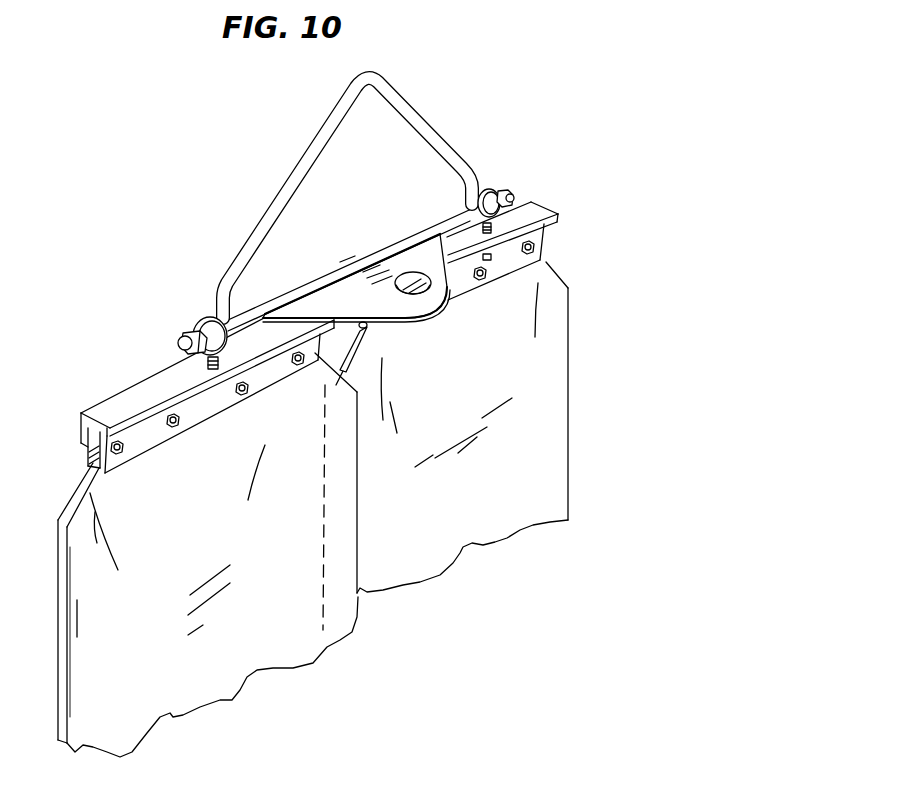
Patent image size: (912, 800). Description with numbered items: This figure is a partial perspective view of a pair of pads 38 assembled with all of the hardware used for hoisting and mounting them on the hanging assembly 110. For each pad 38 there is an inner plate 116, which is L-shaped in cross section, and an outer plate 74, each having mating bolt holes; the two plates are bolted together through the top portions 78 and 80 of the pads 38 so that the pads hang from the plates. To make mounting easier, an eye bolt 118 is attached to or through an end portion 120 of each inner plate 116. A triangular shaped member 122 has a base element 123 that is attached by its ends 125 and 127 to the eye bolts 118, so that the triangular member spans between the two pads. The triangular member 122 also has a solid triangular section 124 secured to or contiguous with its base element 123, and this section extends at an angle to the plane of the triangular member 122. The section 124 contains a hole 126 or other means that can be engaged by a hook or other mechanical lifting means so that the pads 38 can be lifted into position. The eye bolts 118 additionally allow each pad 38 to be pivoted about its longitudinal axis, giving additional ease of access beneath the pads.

The pad 38 is at (214, 570).
The outer plate 74 is at (200, 415).
The top portion 78 is at (90, 465).
The top portion 80 is at (361, 357).
The hanging assembly 110 is at (359, 198).
The inner plate 116 is at (82, 445).
The eye bolt 118 is at (200, 320).
The end portion 120 is at (122, 400).
The triangular shaped member 122 is at (294, 166).
The base element 123 is at (370, 257).
The solid triangular section 124 is at (375, 308).
The end 125 is at (180, 345).
The hole 126 is at (432, 294).
The end 127 is at (510, 192).